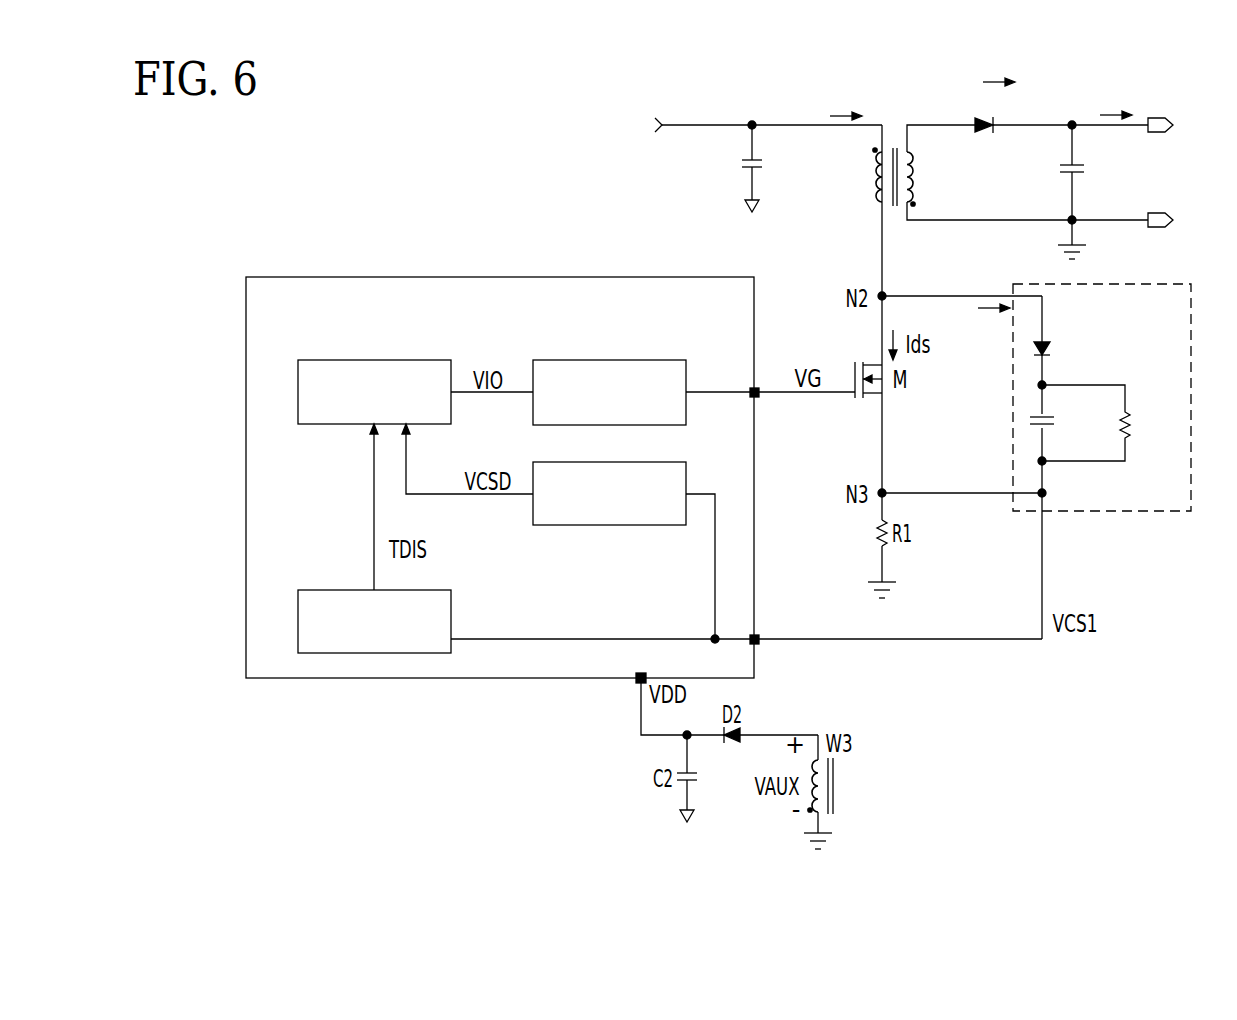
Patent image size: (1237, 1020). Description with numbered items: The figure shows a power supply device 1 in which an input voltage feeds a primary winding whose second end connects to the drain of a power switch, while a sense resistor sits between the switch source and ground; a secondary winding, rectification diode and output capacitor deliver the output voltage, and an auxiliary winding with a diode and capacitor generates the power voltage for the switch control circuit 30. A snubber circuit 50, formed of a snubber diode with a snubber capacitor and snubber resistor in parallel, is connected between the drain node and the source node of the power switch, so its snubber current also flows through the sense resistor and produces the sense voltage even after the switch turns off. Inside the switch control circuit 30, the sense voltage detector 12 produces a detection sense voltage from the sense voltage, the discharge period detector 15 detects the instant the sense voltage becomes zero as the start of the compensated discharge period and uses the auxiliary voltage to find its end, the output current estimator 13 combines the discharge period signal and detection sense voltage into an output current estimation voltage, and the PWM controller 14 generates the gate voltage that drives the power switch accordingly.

The power supply device 1 is at (817, 207).
The switch control circuit 30 is at (500, 450).
The sense voltage detector 12 is at (609, 521).
The output current estimator 13 is at (374, 365).
The PWM controller 14 is at (609, 365).
The discharge period detector 15 is at (399, 621).
The snubber circuit 50 is at (1102, 461).